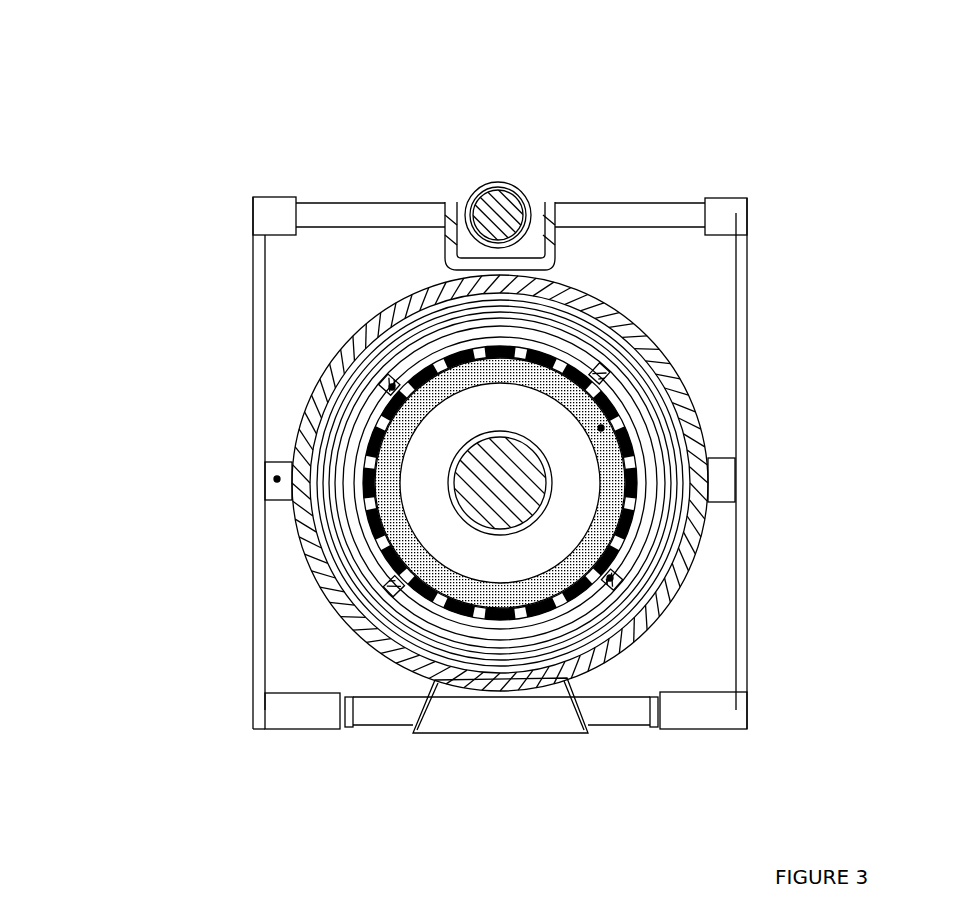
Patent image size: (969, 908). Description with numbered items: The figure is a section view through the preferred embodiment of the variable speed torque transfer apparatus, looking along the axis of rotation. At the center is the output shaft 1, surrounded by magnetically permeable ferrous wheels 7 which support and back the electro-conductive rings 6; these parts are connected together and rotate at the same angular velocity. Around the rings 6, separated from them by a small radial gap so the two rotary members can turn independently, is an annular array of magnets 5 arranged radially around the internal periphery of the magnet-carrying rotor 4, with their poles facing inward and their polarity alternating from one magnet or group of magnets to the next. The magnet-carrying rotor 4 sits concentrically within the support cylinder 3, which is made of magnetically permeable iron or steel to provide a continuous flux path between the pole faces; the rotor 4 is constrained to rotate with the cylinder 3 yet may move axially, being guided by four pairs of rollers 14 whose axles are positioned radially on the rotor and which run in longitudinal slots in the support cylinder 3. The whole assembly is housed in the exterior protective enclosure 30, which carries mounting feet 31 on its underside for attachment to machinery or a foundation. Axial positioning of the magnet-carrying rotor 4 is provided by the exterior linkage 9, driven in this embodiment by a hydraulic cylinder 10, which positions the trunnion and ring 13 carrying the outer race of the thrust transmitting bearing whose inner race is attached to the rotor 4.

The output shaft 1 is at (543, 440).
The support cylinder 3 is at (643, 403).
The magnet-carrying rotor 4 is at (645, 455).
The magnets 5 is at (557, 347).
The electro-conductive rings 6 is at (615, 535).
The magnetically permeable ferrous wheels 7 is at (628, 585).
The exterior linkage 9 is at (749, 556).
The hydraulic cylinder 10 is at (518, 178).
The trunnion and ring 13 is at (277, 479).
The rollers 14 is at (392, 387).
The exterior protective enclosure 30 is at (393, 672).
The mounting feet 31 is at (538, 737).